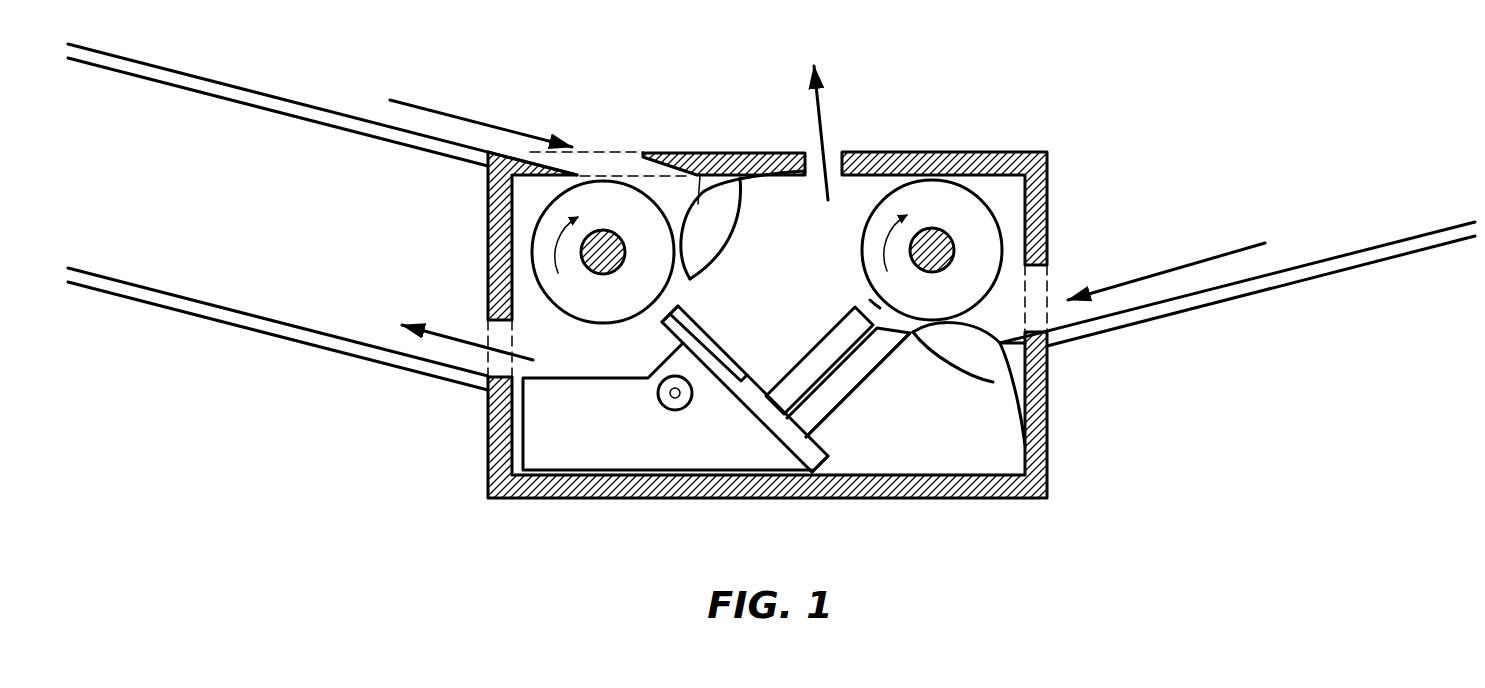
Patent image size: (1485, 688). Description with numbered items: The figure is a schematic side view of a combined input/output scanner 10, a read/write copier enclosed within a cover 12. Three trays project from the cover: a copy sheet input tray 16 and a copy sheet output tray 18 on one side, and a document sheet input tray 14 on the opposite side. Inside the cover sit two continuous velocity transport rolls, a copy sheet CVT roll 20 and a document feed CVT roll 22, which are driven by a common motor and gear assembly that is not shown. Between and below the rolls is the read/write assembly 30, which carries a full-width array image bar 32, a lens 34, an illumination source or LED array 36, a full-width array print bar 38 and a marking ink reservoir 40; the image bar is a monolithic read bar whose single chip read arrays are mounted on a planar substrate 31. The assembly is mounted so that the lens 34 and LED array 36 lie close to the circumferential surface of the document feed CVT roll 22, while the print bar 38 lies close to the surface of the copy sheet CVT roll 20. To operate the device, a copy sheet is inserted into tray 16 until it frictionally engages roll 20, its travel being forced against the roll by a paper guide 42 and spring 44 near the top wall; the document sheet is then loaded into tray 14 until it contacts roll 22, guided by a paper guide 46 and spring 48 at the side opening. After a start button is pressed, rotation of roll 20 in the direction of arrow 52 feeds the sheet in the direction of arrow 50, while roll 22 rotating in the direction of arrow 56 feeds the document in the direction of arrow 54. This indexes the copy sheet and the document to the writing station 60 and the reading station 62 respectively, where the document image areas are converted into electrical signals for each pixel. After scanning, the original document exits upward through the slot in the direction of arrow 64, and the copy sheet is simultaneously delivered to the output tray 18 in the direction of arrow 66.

The input/output scanner 10 is at (771, 250).
The cover 12 is at (942, 151).
The document sheet input tray 14 is at (1346, 248).
The copy sheet input tray 16 is at (180, 73).
The copy sheet output tray 18 is at (180, 296).
The copy sheet CVT roll 20 is at (553, 207).
The document feed CVT roll 22 is at (987, 196).
The read/write assembly 30 is at (745, 331).
The planar substrate 31 is at (826, 470).
The full-width array image bar 32 is at (773, 372).
The lens 34 is at (853, 308).
The LED array 36 is at (886, 369).
The full-width array print bar 38 is at (693, 306).
The marking ink reservoir 40 is at (550, 425).
The paper guide 42 is at (719, 177).
The spring 44 is at (750, 186).
The paper guide 46 is at (1015, 360).
The spring 48 is at (1010, 390).
The arrow 50 is at (432, 103).
The arrow 52 is at (553, 250).
The arrow 54 is at (1166, 254).
The arrow 56 is at (883, 247).
The writing station 60 is at (661, 375).
The reading station 62 is at (858, 287).
The arrow 64 is at (827, 136).
The arrow 66 is at (460, 336).